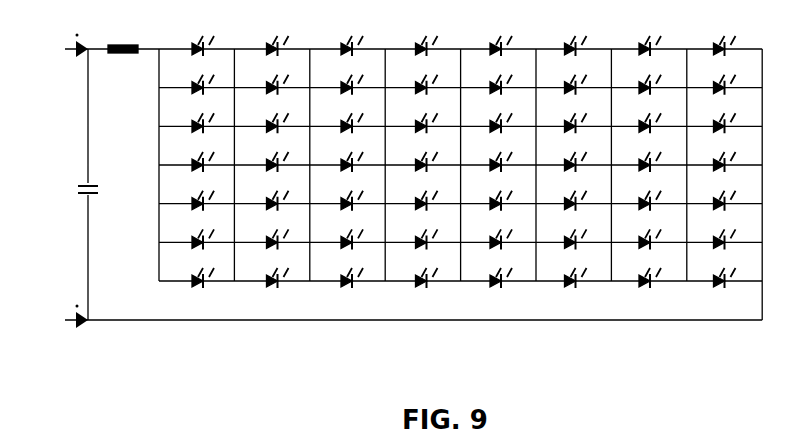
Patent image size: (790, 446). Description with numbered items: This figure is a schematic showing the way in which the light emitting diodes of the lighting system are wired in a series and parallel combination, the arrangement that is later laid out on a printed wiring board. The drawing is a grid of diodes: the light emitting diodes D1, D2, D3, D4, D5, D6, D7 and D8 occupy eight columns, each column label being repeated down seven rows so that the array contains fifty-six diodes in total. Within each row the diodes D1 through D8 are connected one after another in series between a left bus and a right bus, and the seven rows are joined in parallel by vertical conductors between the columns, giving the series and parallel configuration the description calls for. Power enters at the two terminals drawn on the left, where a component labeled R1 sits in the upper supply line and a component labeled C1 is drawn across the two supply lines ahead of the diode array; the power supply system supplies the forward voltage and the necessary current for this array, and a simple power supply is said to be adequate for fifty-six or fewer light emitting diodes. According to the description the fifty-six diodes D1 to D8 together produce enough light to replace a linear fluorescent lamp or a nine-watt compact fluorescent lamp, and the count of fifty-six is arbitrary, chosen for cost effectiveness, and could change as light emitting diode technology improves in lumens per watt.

The resistor R1 is at (123, 43).
The capacitor C1 is at (94, 190).
The light emitting diode column 1 D1 is at (198, 161).
The light emitting diode column 2 D2 is at (273, 161).
The light emitting diode column 3 D3 is at (347, 161).
The light emitting diode column 4 D4 is at (422, 161).
The light emitting diode column 5 D5 is at (496, 161).
The light emitting diode column 6 D6 is at (571, 161).
The light emitting diode column 7 D7 is at (645, 161).
The light emitting diode column 8 D8 is at (720, 161).